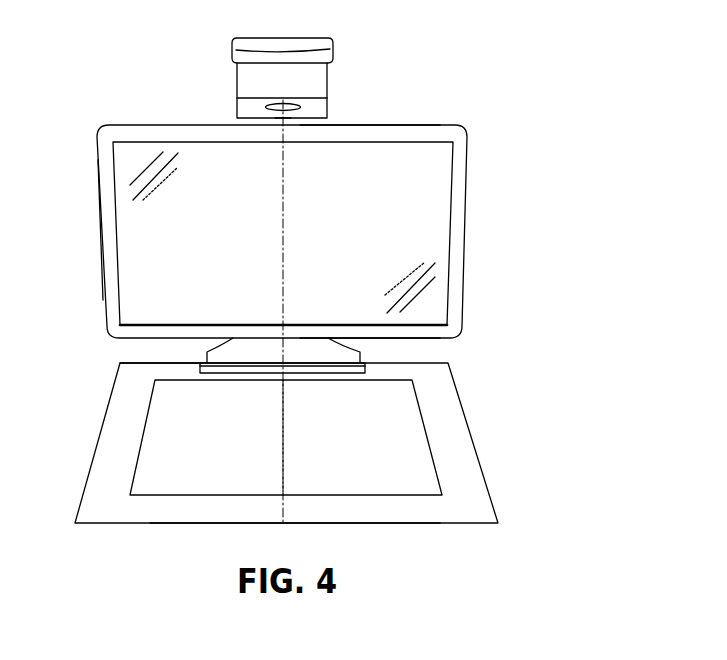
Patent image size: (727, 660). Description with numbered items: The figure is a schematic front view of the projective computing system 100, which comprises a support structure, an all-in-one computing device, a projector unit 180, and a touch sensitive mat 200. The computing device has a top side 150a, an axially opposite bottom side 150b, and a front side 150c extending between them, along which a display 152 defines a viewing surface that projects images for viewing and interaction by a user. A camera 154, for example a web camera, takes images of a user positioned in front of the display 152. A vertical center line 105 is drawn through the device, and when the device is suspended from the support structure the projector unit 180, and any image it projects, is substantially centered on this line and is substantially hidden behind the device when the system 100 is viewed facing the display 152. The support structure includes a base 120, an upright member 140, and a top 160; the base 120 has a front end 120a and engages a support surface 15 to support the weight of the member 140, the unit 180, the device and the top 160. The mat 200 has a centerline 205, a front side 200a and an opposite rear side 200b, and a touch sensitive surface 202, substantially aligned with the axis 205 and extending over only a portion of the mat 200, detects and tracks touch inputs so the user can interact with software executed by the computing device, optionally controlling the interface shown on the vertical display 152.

The support surface 15 is at (633, 452).
The projective computing system 100 is at (529, 190).
The central axis of display 105 is at (283, 168).
The base 120 is at (172, 368).
The front end of base 120a is at (231, 388).
The upright member 140 is at (225, 78).
The top side 150a is at (380, 125).
The bottom side 150b is at (405, 339).
The front side 150c is at (113, 234).
The display 152 is at (360, 197).
The camera 154 is at (283, 130).
The top 160 is at (342, 32).
The projector unit 180 is at (226, 114).
The touch sensitive mat 200 is at (452, 475).
The front side of mat 200a is at (402, 523).
The rear side of mat 200b is at (148, 363).
The touch sensitive surface 202 is at (415, 433).
The centerline of mat 205 is at (287, 398).